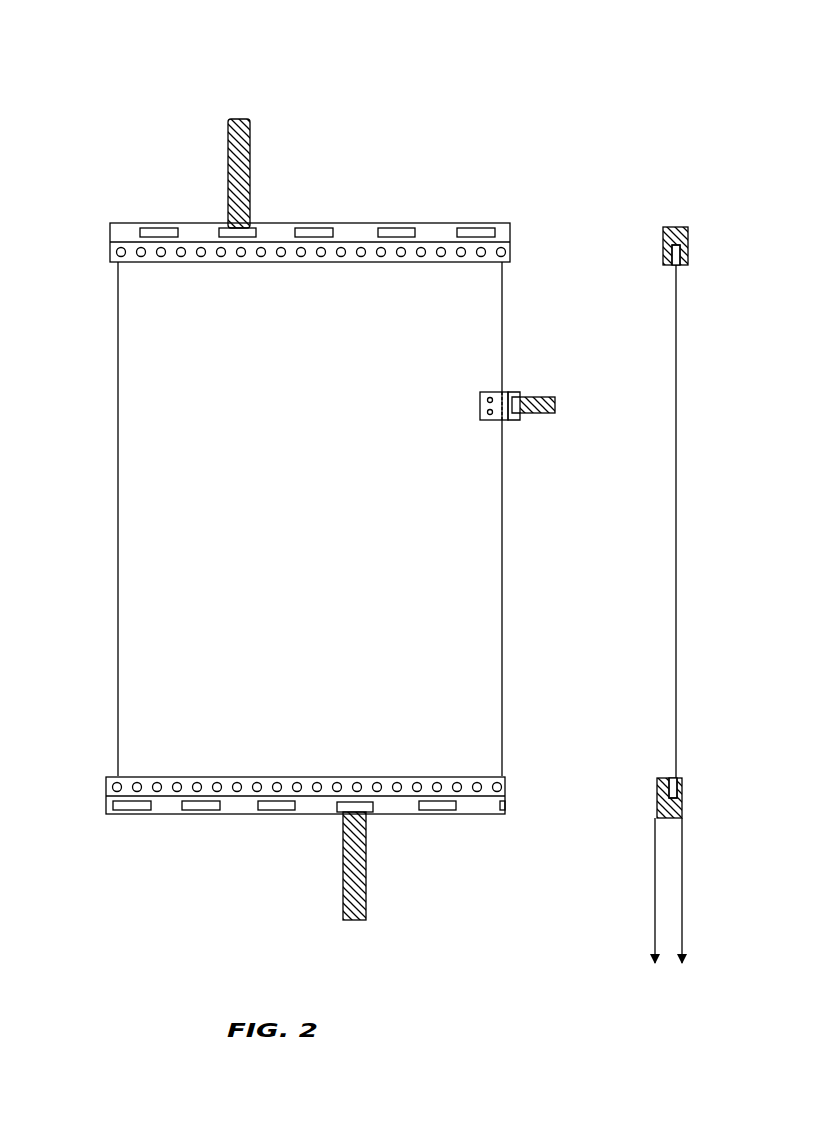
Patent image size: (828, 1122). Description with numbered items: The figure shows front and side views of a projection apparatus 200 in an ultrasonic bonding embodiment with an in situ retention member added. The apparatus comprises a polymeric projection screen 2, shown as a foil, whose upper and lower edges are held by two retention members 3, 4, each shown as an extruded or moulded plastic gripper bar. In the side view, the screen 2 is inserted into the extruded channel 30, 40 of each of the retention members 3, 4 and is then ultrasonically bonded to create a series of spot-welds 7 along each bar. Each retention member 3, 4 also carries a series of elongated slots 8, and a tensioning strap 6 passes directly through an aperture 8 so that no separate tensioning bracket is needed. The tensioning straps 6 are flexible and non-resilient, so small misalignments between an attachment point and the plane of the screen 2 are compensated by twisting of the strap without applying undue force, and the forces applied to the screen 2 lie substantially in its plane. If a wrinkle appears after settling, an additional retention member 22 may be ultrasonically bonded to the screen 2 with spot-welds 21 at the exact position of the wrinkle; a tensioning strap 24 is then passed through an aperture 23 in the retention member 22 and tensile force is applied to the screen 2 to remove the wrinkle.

The projection apparatus 200 is at (156, 108).
The polymeric projection screen 2 is at (118, 509).
The retention member 3 is at (432, 242).
The retention member 4 is at (433, 818).
The tensioning strap 6 is at (250, 150).
The ultrasonic spot-weld 7 is at (455, 784).
The elongated slot 8 is at (396, 228).
The spot-weld 21 is at (489, 396).
The additional retention member 22 is at (501, 418).
The aperture 23 is at (516, 397).
The tensioning strap 24 is at (549, 410).
The extruded channel 30 is at (683, 262).
The extruded channel 40 is at (673, 786).